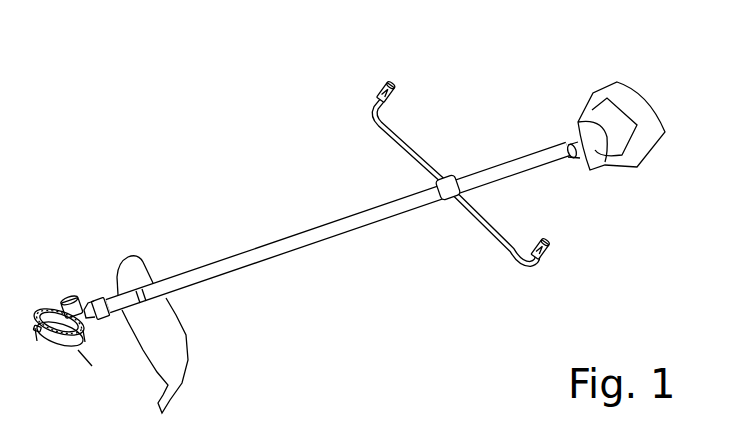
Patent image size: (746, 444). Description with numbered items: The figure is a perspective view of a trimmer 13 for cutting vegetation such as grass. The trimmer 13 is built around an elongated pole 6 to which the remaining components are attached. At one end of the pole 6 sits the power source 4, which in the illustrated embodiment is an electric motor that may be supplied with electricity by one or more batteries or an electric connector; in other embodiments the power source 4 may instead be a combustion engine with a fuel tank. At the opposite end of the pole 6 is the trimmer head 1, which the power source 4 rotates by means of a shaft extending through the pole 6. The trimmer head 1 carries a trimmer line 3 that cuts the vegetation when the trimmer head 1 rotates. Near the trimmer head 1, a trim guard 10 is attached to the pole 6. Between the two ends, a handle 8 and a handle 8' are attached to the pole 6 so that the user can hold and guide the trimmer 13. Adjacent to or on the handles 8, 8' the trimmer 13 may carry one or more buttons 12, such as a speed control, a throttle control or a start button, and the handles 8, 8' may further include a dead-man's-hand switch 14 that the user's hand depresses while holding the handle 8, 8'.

The trimmer head 1 is at (66, 332).
The trimmer line 3 is at (43, 312).
The power source 4 is at (647, 142).
The pole 6 is at (322, 230).
The handle 8 is at (413, 63).
The handle 8' is at (580, 233).
The trim guard 10 is at (170, 323).
The button 12 is at (387, 86).
The trimmer 13 is at (208, 138).
The dead-man's-hand switch 14 is at (507, 247).